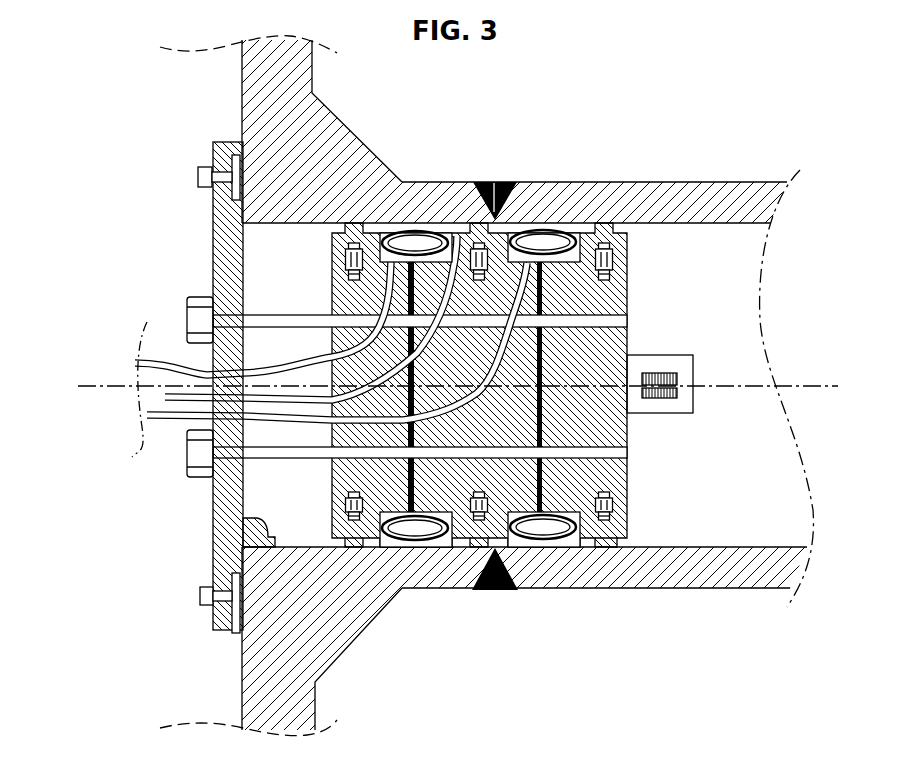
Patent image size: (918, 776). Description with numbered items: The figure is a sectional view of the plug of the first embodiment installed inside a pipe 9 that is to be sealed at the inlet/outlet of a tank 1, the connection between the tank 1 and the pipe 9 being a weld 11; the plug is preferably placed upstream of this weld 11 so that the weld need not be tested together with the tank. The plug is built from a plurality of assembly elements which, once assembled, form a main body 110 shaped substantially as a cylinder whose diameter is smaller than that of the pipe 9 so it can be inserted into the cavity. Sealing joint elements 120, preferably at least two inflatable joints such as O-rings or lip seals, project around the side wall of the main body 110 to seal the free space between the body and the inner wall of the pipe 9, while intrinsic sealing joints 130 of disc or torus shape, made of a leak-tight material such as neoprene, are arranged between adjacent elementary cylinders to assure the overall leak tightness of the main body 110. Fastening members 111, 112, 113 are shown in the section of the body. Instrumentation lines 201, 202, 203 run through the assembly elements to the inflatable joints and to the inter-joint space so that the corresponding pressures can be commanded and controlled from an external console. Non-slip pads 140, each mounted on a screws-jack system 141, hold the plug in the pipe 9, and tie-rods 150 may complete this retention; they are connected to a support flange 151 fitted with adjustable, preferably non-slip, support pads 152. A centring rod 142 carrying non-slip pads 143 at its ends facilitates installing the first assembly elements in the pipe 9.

The tank 1 is at (267, 100).
The pipe 9 is at (727, 200).
The weld 11 is at (494, 183).
The main body 110 is at (647, 265).
The fastening bolt 111 is at (587, 240).
The fastening bolt 112 is at (502, 237).
The fastening bolt 113 is at (370, 240).
The sealing joint elements 120 is at (545, 242).
The intrinsic sealing joints 130 is at (538, 368).
The non-slip pads 140 is at (610, 537).
The screws-jack system 141 is at (613, 510).
The centring rod 142 is at (673, 365).
The non-slip pads 143 is at (663, 397).
The tie-rods 150 is at (290, 452).
The support flange 151 is at (228, 548).
The adjustable support pads 152 is at (240, 613).
The instrumentation line 201 is at (150, 360).
The instrumentation line 202 is at (167, 398).
The instrumentation line 203 is at (180, 416).